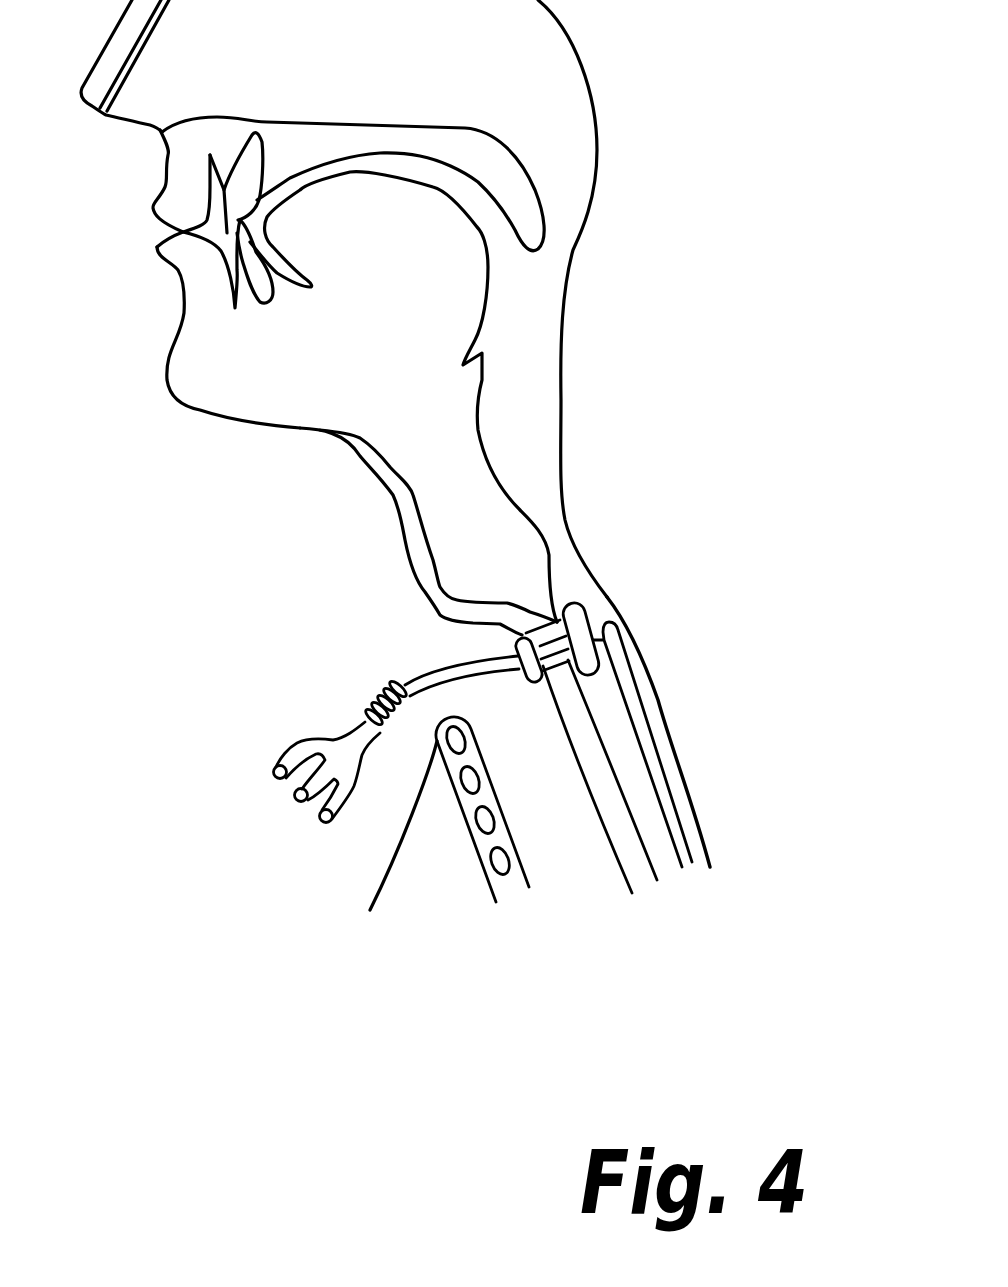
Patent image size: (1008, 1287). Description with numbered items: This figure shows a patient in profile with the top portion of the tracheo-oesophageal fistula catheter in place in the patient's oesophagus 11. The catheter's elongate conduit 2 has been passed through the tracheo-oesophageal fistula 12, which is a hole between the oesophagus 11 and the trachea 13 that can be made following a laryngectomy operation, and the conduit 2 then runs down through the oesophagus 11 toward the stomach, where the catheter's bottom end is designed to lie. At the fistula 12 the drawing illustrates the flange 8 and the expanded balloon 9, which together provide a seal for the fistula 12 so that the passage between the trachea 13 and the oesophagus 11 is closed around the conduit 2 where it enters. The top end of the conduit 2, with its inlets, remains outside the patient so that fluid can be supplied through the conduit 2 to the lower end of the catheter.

The conduit 2 is at (643, 715).
The flange 8 is at (442, 618).
The expanded balloon 9 is at (590, 610).
The oesophagus 11 is at (680, 787).
The tracheo-oesophageal fistula 12 is at (556, 621).
The trachea 13 is at (560, 858).